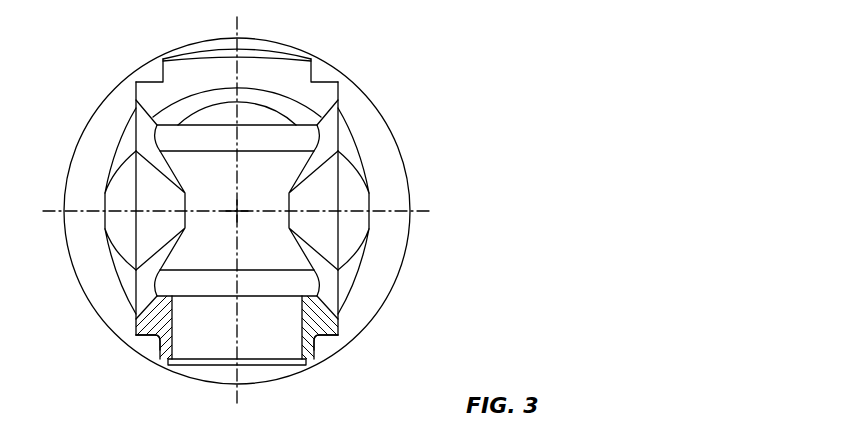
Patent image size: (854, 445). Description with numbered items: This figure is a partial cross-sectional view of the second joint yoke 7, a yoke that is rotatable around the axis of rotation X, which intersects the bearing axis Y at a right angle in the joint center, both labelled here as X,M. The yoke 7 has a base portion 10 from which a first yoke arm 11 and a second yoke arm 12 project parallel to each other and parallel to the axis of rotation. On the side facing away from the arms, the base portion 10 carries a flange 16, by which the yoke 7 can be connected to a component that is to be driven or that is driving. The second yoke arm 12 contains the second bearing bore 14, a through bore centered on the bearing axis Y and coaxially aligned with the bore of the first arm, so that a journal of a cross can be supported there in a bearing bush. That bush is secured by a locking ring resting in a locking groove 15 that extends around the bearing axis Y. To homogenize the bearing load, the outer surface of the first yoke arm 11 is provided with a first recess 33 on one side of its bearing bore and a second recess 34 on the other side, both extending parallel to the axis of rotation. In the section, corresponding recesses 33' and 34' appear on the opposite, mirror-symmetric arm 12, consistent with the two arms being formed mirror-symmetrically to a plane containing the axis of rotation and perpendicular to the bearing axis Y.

The second joint yoke 7 is at (462, 134).
The flange 16 is at (398, 180).
The base portion 10 is at (353, 250).
The first yoke arm 11 is at (293, 73).
The first recess 33 is at (121, 67).
The second recess 34 is at (360, 76).
The second bearing bore 14 is at (172, 316).
The second yoke arm 12 is at (307, 352).
The lower left flange edge 33' is at (120, 356).
The lower right flange edge 34' is at (364, 332).
The locking groove 15 is at (181, 365).
The axis of rotation and joint center X,M is at (231, 209).
The bearing axis Y is at (238, 250).